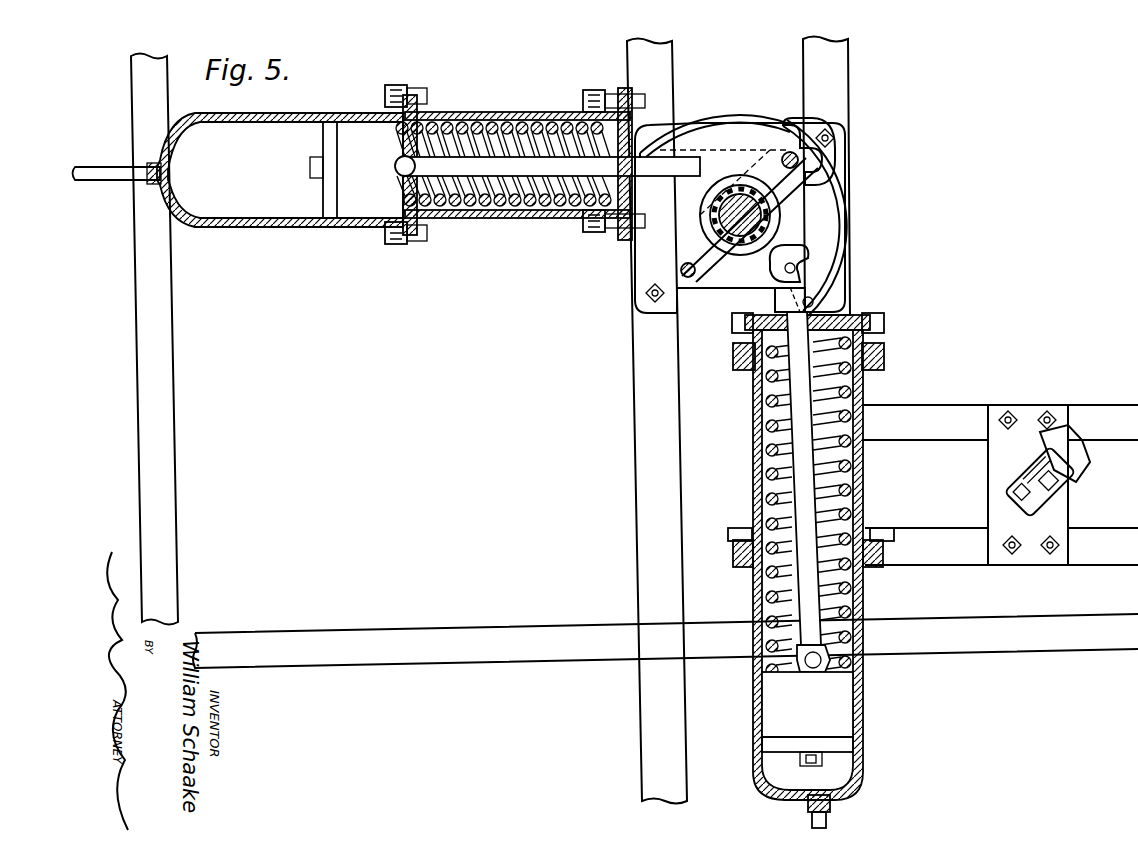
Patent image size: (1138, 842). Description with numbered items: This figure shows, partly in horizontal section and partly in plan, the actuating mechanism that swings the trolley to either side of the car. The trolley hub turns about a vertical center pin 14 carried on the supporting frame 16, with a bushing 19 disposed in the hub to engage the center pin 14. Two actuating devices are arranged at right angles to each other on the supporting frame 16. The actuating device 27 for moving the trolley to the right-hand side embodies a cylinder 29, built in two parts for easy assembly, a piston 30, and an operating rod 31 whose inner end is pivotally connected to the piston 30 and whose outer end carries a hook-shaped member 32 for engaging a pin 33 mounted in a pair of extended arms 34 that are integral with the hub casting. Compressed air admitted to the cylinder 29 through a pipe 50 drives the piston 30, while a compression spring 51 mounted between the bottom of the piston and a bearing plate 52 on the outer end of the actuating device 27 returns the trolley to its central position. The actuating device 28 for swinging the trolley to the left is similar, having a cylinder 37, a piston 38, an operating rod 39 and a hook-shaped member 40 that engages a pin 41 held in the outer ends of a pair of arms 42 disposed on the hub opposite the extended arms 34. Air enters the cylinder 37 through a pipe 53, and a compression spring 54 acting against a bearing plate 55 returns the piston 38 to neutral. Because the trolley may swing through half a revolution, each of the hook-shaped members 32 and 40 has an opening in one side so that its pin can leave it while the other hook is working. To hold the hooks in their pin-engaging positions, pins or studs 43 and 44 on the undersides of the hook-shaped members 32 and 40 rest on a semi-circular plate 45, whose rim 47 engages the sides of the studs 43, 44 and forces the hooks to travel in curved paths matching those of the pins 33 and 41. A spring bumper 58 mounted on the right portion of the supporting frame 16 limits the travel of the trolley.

The center pin 14 is at (710, 215).
The supporting frame 16 is at (1100, 640).
The bushing 19 is at (772, 222).
The actuating device 27 is at (238, 181).
The actuating device 28 is at (830, 786).
The cylinder 29 is at (255, 228).
The piston 30 is at (337, 185).
The operating rod 31 is at (517, 170).
The hook-shaped member 32 is at (822, 162).
The pin 33 is at (795, 153).
The extended arms 34 is at (750, 220).
The cylinder 37 is at (866, 757).
The piston 38 is at (858, 703).
The operating rod 39 is at (815, 602).
The hook-shaped member 40 is at (800, 258).
The pin 41 is at (682, 270).
The arms 42 is at (695, 243).
The pin or stud 43 is at (768, 138).
The pin or stud 44 is at (790, 305).
The semi-circular plate 45 is at (835, 226).
The rim 47 is at (838, 208).
The pipe 50 is at (110, 183).
The compression spring 51 is at (470, 205).
The bearing plate 52 is at (625, 95).
The pipe 53 is at (830, 816).
The compression spring 54 is at (752, 460).
The bearing plate 55 is at (880, 325).
The spring bumper 58 is at (1080, 460).